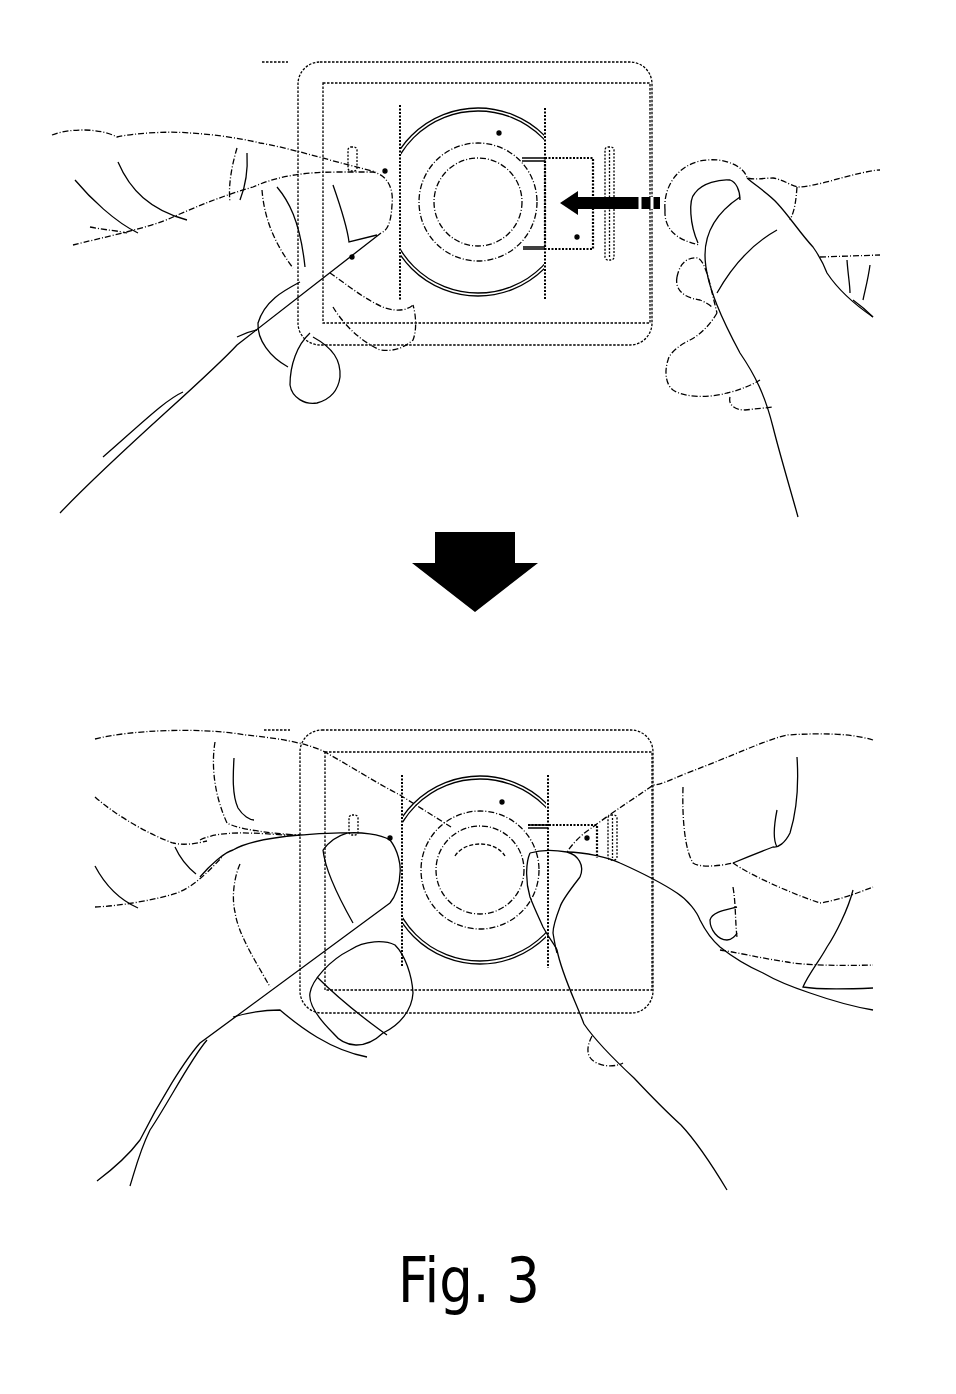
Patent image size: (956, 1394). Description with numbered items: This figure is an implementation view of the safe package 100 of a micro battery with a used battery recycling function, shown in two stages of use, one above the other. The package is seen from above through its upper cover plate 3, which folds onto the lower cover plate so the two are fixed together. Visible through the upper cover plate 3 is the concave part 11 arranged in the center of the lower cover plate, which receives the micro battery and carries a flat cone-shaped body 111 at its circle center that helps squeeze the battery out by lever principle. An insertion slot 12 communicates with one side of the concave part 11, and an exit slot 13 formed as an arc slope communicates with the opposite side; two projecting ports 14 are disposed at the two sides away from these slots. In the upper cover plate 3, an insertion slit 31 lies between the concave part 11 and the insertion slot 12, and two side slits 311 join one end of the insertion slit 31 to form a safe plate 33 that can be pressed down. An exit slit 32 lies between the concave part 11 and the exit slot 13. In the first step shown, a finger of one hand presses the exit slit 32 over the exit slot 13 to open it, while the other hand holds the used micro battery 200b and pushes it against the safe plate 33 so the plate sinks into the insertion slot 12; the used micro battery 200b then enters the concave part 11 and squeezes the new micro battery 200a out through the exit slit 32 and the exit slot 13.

The safe package 100 is at (290, 60).
The upper cover plate 3 is at (437, 337).
The concave part 11 is at (499, 132).
The flat cone-shaped body 111 is at (476, 845).
The insertion slot 12 is at (579, 242).
The exit slot 13 is at (386, 169).
The projecting ports 14 is at (616, 146).
The insertion slit 31 is at (543, 112).
The side slits 311 is at (571, 158).
The exit slit 32 is at (397, 108).
The safe plate 33 is at (595, 158).
The new micro battery 200a is at (460, 170).
The used micro battery 200b is at (743, 168).